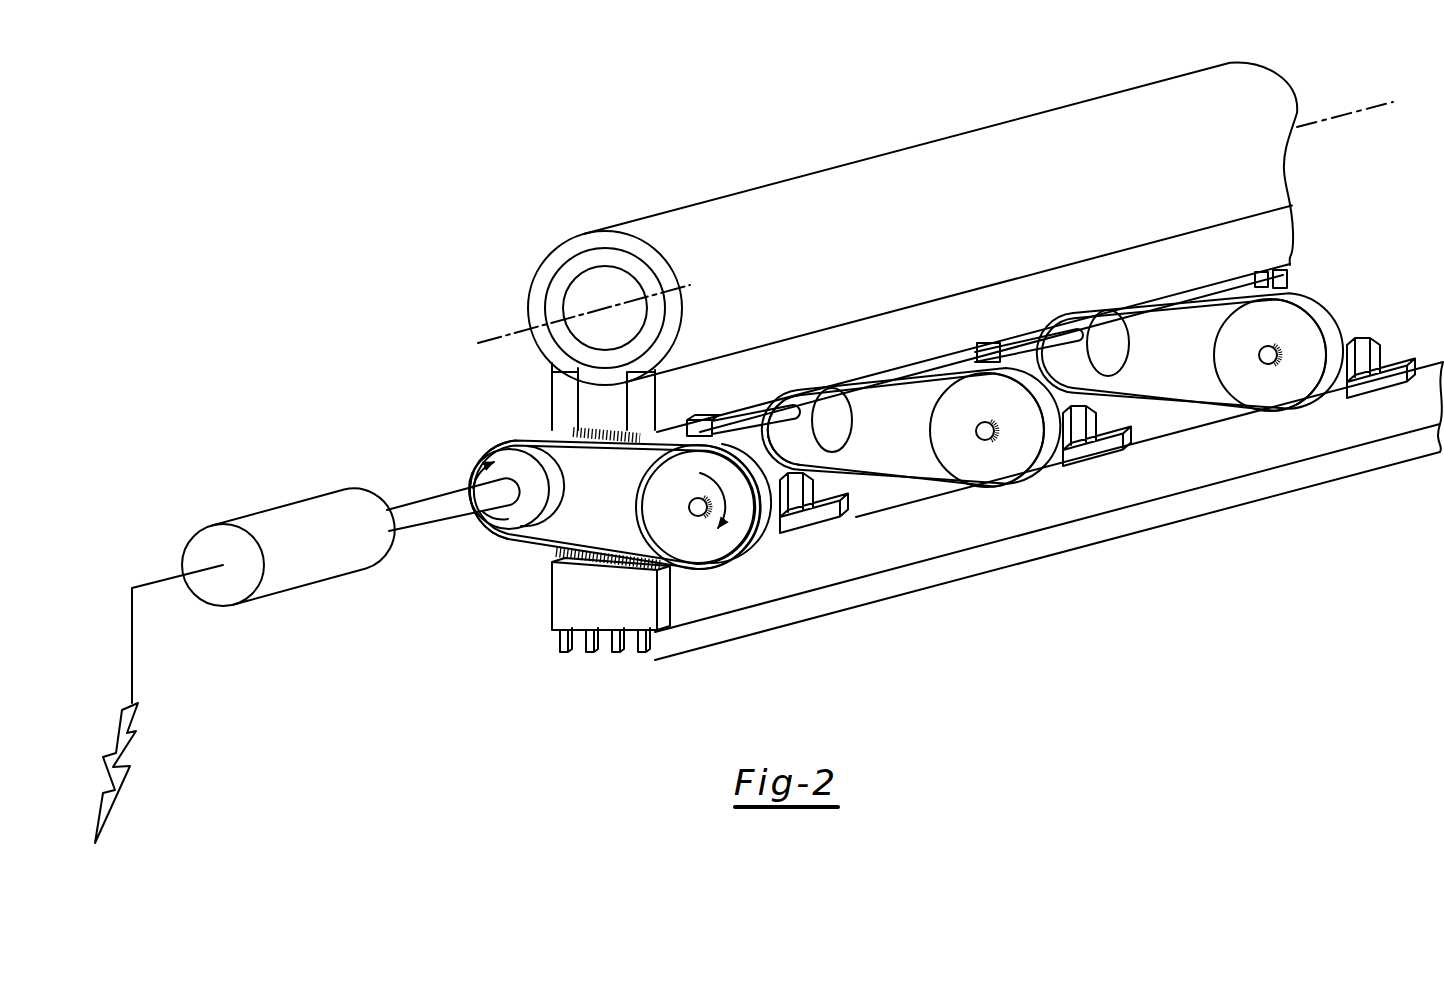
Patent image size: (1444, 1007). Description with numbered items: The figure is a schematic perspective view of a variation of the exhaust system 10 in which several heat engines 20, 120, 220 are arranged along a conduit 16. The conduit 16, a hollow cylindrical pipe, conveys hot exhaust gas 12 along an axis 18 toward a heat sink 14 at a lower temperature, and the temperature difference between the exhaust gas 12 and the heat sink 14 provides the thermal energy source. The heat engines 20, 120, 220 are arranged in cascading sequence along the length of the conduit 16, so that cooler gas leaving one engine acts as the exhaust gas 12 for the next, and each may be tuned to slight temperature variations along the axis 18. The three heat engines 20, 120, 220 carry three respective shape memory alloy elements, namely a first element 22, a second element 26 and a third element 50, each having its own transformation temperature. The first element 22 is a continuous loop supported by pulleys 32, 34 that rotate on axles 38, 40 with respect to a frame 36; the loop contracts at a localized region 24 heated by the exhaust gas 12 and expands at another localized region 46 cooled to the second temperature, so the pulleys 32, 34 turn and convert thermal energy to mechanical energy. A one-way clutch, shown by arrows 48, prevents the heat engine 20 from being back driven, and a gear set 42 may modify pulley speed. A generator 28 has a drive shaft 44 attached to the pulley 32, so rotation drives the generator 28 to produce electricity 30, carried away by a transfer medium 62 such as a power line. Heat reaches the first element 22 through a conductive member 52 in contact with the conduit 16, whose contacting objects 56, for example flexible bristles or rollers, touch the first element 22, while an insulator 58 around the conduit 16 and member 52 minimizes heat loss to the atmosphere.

The exhaust system 10 is at (536, 182).
The exhaust gas 12 is at (621, 290).
The heat sink 14 is at (968, 532).
The conduit 16 is at (658, 318).
The axis 18 is at (483, 343).
The heat engine 20 is at (503, 547).
The first element 22 is at (538, 548).
The localized region 24 is at (694, 424).
The second element 26 is at (1047, 468).
The generator 28 is at (345, 578).
The electricity 30 is at (135, 752).
The pulley 32 is at (467, 470).
The pulley 34 is at (758, 545).
The frame 36 is at (808, 500).
The axle 38 is at (771, 444).
The axle 40 is at (583, 470).
The gear set 42 is at (689, 510).
The drive shaft 44 is at (392, 503).
The other localized region 46 is at (684, 584).
The clutch 48 is at (460, 485).
The third element 50 is at (1312, 300).
The member 52 is at (593, 382).
The contacting objects 56 is at (575, 430).
The insulator 58 is at (548, 252).
The transfer medium 62 is at (135, 668).
The heat engine 120 is at (899, 492).
The heat engine 220 is at (1186, 415).